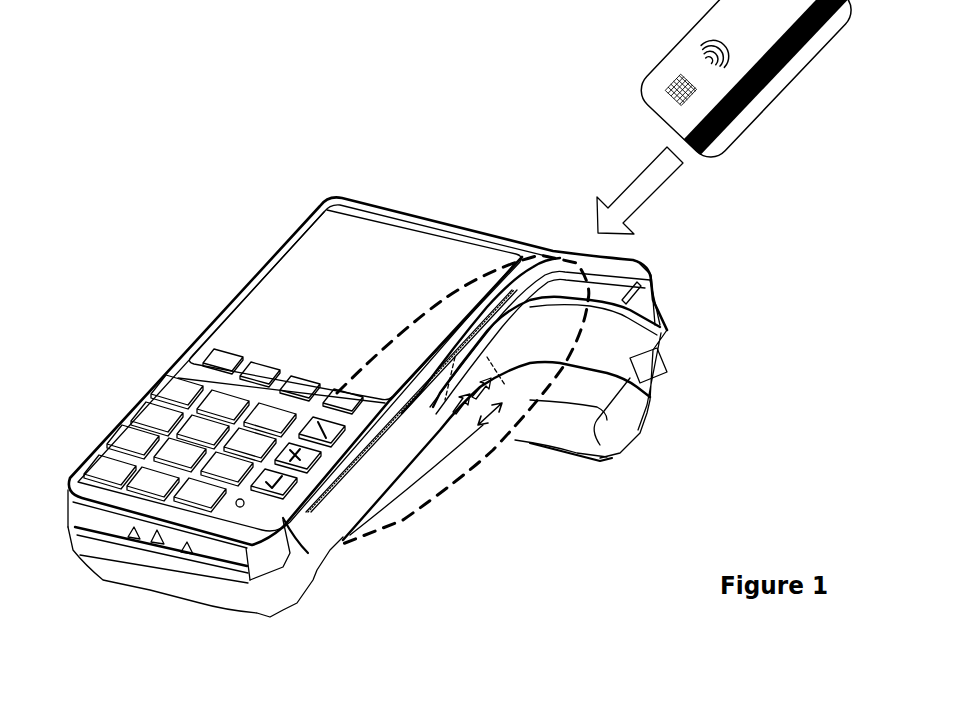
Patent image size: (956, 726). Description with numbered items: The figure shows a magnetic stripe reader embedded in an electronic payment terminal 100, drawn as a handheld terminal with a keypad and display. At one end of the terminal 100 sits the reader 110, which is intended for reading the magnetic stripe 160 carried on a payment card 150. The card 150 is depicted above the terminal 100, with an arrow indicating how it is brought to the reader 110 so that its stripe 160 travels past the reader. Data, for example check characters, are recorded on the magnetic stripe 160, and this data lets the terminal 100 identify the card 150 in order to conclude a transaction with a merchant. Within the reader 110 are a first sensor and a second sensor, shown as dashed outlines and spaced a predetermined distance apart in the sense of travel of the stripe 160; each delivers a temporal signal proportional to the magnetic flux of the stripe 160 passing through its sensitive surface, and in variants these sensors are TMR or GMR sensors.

The electronic payment terminal 100 is at (165, 360).
The reader 110 is at (668, 330).
The payment card 150 is at (660, 54).
The magnetic stripe 160 is at (766, 77).